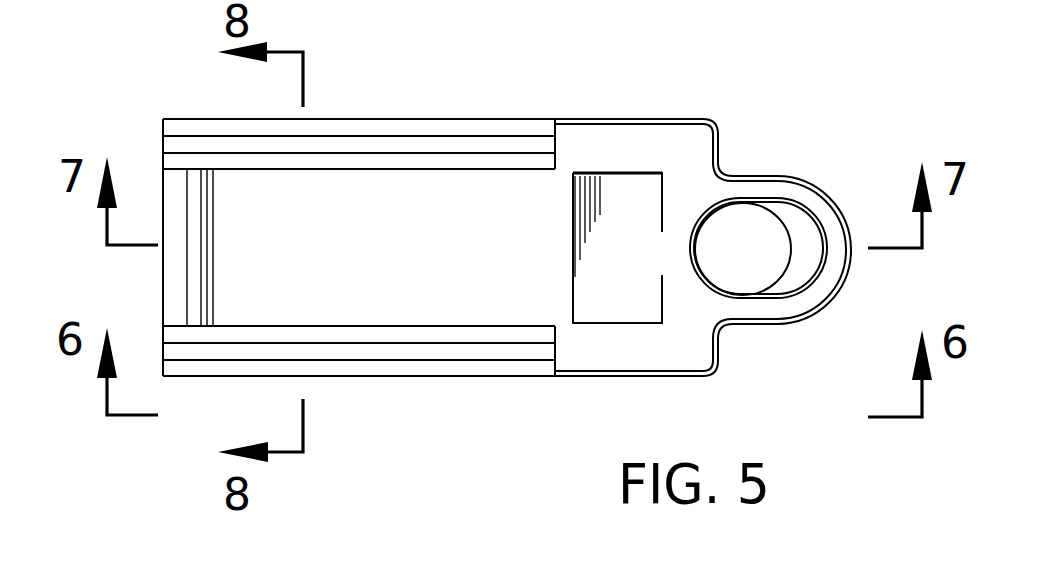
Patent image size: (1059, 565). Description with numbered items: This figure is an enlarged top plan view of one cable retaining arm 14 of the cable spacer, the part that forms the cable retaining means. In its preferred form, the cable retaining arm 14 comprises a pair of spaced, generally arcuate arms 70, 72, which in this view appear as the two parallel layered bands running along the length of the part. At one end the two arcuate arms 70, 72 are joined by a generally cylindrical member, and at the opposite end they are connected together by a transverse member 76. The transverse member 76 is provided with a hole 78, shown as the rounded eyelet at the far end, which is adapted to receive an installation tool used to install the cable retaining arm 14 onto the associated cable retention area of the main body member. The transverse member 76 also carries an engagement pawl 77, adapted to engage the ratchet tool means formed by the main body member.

The cable retaining arm 14 is at (375, 396).
The arcuate arm 70 is at (453, 367).
The arcuate arm 72 is at (443, 132).
The transverse member 76 is at (607, 148).
The engagement pawl 77 is at (578, 298).
The hole 78 is at (744, 237).